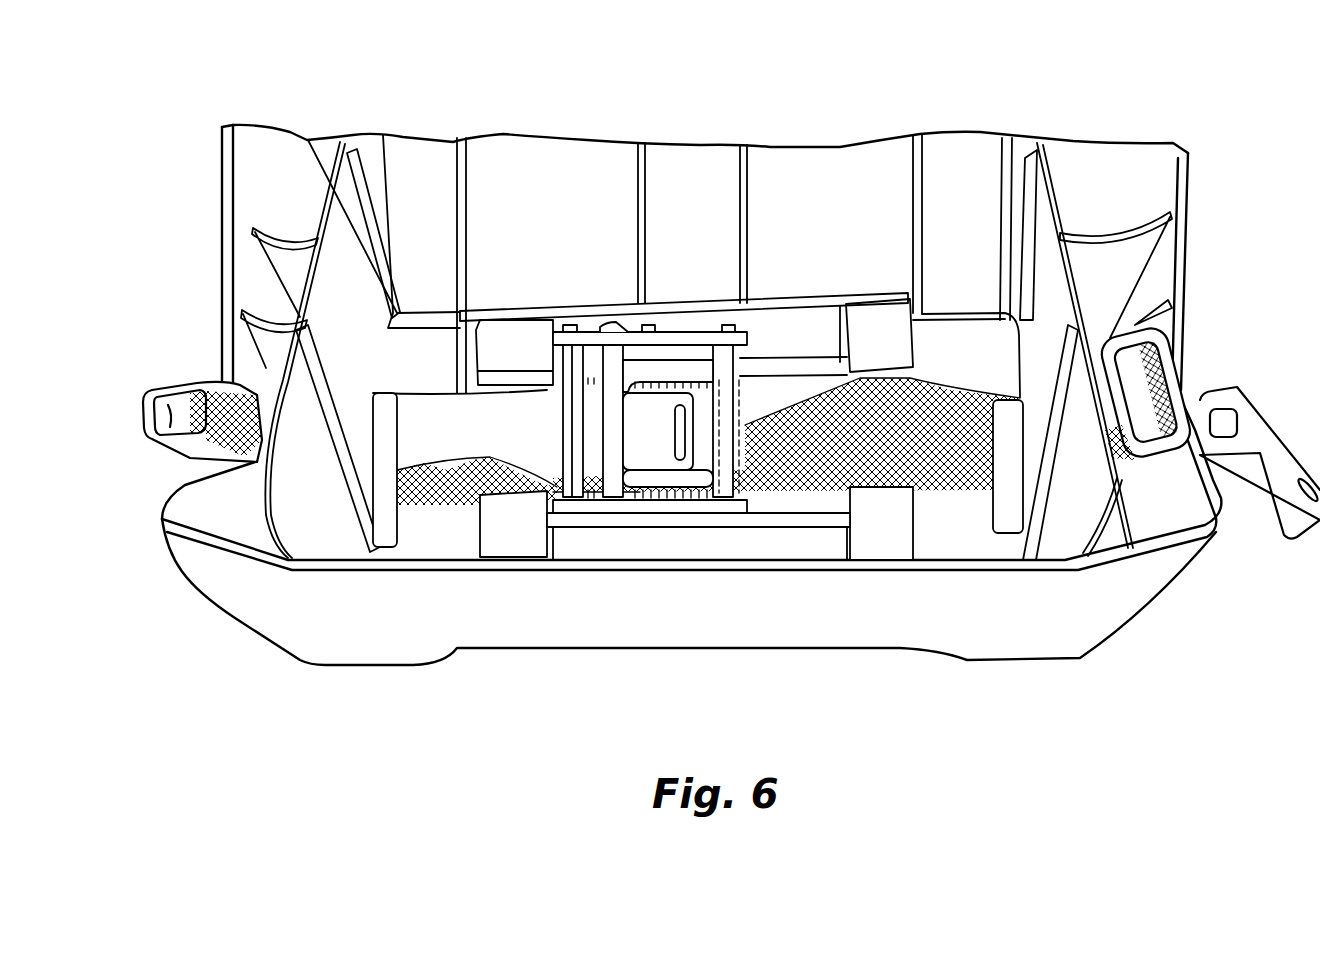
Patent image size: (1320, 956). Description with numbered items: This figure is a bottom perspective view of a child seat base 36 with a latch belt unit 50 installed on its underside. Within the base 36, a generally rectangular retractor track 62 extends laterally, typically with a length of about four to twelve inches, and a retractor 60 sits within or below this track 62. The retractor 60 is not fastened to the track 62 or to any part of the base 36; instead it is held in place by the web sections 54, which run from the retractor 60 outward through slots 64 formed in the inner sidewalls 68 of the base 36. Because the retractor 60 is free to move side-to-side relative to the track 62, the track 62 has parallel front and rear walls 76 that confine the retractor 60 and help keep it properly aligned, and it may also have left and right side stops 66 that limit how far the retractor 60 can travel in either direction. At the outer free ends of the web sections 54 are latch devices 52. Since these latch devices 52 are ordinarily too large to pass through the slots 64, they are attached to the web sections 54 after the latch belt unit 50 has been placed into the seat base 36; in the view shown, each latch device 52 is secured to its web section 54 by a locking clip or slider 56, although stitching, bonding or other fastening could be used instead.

The base 36 is at (1070, 205).
The latch belt unit 50 is at (762, 292).
The latch devices 52 is at (1273, 445).
The web sections 54 is at (790, 410).
The locking clip or slider 56 is at (1178, 380).
The retractor 60 is at (635, 516).
The retractor track 62 is at (523, 360).
The slots 64 is at (408, 516).
The left and right side stops 66 is at (545, 390).
The inner sidewalls 68 is at (327, 313).
The front and rear walls 76 is at (813, 393).